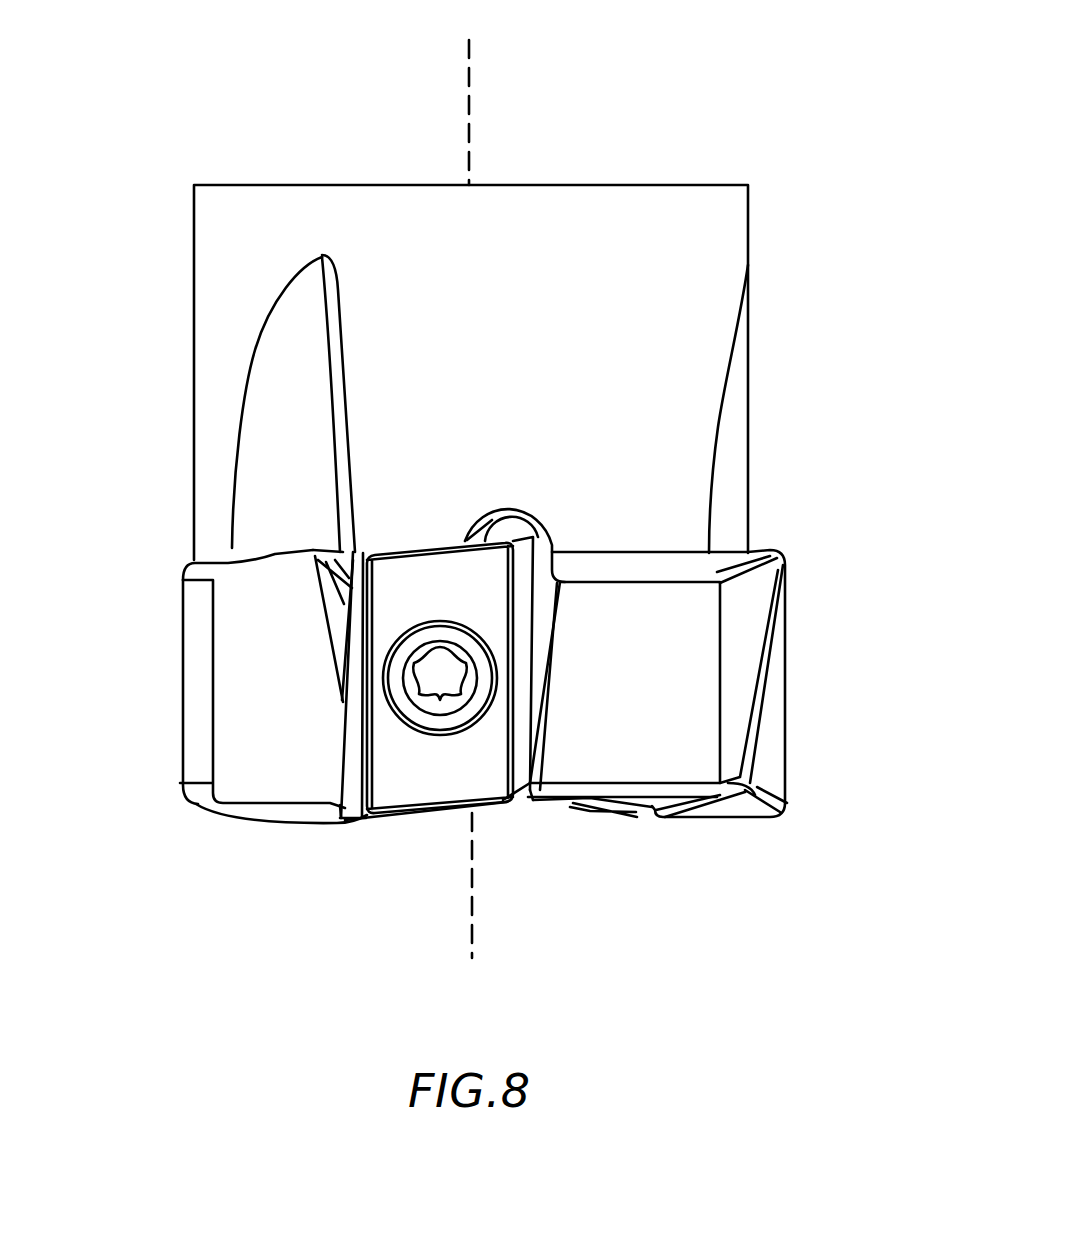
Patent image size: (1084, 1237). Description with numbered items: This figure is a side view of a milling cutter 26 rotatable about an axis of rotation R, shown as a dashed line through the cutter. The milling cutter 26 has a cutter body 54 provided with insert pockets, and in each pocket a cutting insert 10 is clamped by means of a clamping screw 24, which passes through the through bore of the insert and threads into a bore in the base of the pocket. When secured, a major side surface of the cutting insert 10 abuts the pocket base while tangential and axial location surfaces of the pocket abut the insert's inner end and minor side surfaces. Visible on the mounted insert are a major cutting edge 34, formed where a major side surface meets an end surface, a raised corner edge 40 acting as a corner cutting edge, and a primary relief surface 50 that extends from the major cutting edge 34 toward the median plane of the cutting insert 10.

The axis of rotation R is at (470, 62).
The milling cutter 26 is at (710, 98).
The cutter body 54 is at (655, 387).
The primary relief surface 50 is at (360, 715).
The major cutting edge 34 is at (343, 748).
The raised corner edge 40 is at (328, 822).
The cutting insert 10 is at (477, 778).
The clamping screw 24 is at (432, 720).